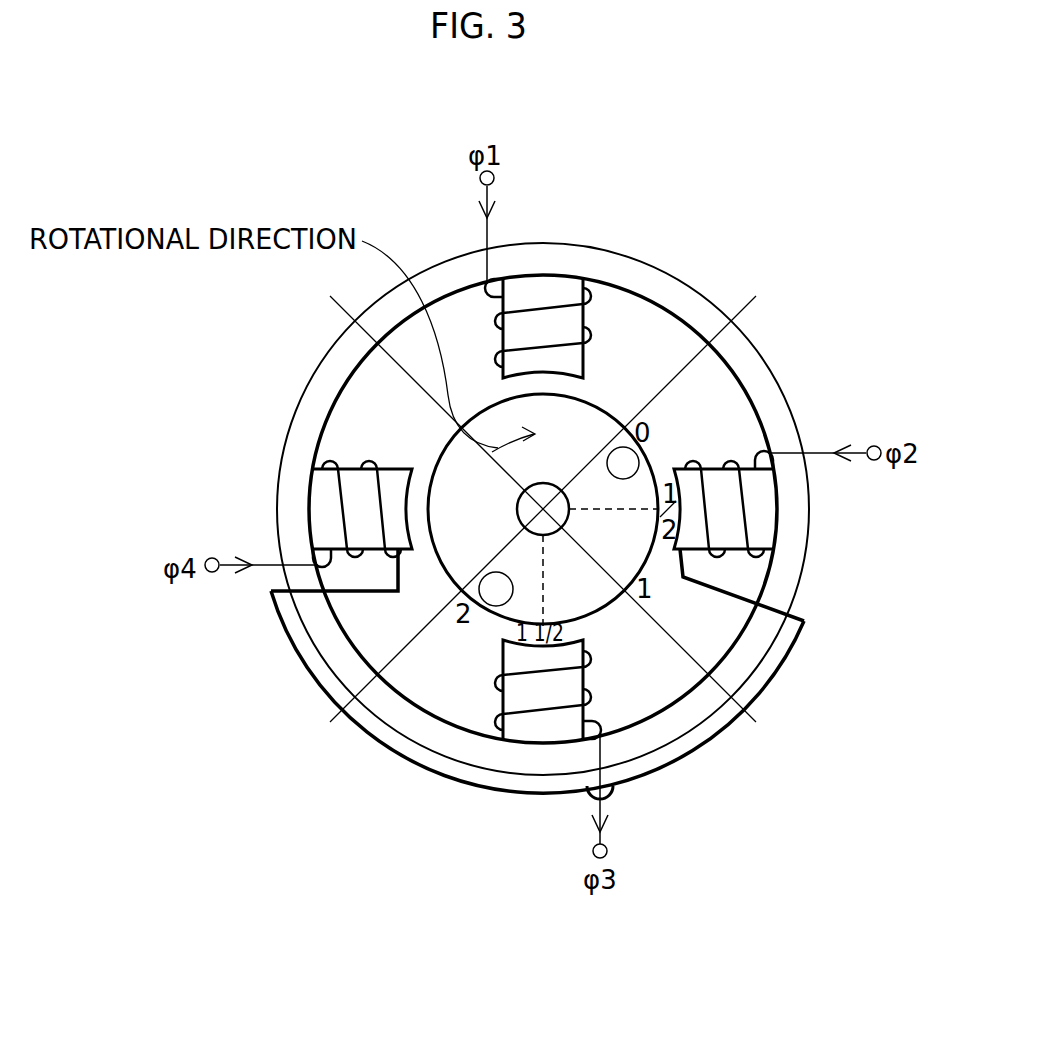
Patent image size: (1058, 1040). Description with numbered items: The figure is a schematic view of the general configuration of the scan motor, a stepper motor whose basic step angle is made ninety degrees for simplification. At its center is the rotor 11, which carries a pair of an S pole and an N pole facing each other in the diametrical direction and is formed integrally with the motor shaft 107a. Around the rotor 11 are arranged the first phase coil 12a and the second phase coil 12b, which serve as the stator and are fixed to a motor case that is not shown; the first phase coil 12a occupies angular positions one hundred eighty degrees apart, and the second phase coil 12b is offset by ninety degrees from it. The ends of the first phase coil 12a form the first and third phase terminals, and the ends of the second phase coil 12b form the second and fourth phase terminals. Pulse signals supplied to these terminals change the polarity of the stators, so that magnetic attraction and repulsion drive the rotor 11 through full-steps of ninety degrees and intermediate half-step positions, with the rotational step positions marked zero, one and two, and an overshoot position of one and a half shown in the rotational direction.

The rotor 11 is at (522, 527).
The first phase coil 12a is at (628, 374).
The second phase coil 12b is at (415, 764).
The rotor shaft 107a is at (528, 532).